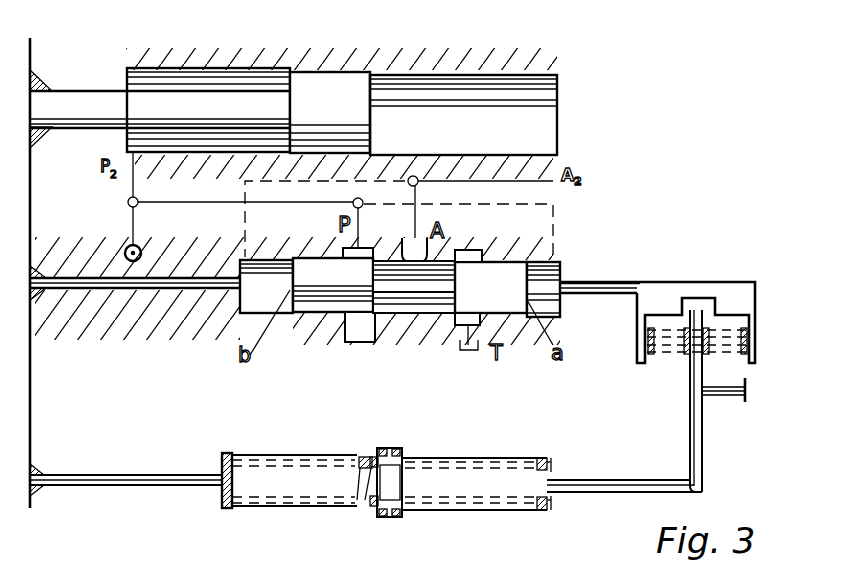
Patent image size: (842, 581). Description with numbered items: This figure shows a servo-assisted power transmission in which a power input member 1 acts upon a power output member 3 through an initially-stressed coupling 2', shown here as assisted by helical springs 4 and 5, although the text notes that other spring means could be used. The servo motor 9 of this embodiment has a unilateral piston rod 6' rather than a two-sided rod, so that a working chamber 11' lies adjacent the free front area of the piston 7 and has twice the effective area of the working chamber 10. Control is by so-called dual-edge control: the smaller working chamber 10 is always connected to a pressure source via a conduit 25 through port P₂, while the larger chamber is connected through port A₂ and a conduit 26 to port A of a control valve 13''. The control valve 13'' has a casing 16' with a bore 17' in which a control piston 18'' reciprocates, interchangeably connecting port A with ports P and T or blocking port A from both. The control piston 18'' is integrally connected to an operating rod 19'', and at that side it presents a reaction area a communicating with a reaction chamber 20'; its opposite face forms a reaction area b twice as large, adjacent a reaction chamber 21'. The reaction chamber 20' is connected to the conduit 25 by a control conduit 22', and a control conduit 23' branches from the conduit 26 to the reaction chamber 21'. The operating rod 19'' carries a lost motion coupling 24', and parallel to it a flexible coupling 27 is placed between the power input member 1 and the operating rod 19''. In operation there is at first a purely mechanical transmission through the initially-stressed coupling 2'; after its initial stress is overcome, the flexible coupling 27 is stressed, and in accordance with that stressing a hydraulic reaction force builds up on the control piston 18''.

The power input member 1 is at (730, 400).
The initially-stressed coupling 2' is at (405, 513).
The power output member 3 is at (30, 378).
The helical spring 4 is at (300, 503).
The helical spring 5 is at (477, 508).
The unilateral piston rod 6' is at (160, 76).
The piston 7 is at (338, 96).
The servo motor 9 is at (384, 50).
The working chamber 10 is at (258, 72).
The working chamber 11' is at (463, 90).
The control valve 13'' is at (327, 325).
The casing 16' is at (135, 330).
The bore 17' is at (583, 274).
The control piston 18'' is at (414, 326).
The operating rod 19'' is at (627, 255).
The reaction chamber 20' is at (576, 333).
The reaction chamber 21' is at (239, 262).
The control conduit 22' is at (489, 271).
The control conduit 23' is at (399, 220).
The lost motion coupling 24' is at (659, 298).
The conduit 25 is at (131, 220).
The conduit 26 is at (553, 181).
The flexible coupling 27 is at (726, 352).